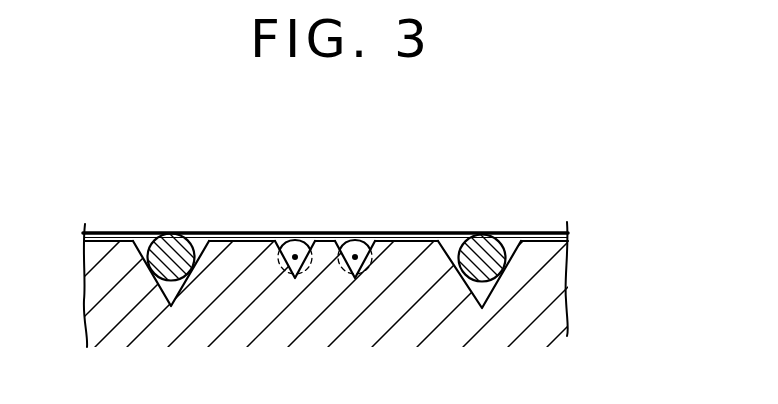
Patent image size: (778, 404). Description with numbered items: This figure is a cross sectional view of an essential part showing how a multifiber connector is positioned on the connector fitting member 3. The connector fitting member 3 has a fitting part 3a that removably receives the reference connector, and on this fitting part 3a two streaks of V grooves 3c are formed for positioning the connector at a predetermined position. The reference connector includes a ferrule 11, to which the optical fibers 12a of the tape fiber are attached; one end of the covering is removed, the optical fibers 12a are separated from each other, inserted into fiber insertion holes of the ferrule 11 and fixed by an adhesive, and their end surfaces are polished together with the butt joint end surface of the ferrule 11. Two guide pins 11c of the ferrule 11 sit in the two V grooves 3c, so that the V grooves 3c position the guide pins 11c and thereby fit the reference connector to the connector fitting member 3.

The connector fitting member 3 is at (573, 272).
The fitting part 3a is at (248, 237).
The V groove 3c is at (143, 237).
The ferrule 11 is at (442, 228).
The guide pin 11c is at (175, 235).
The optical fiber 12a is at (354, 237).